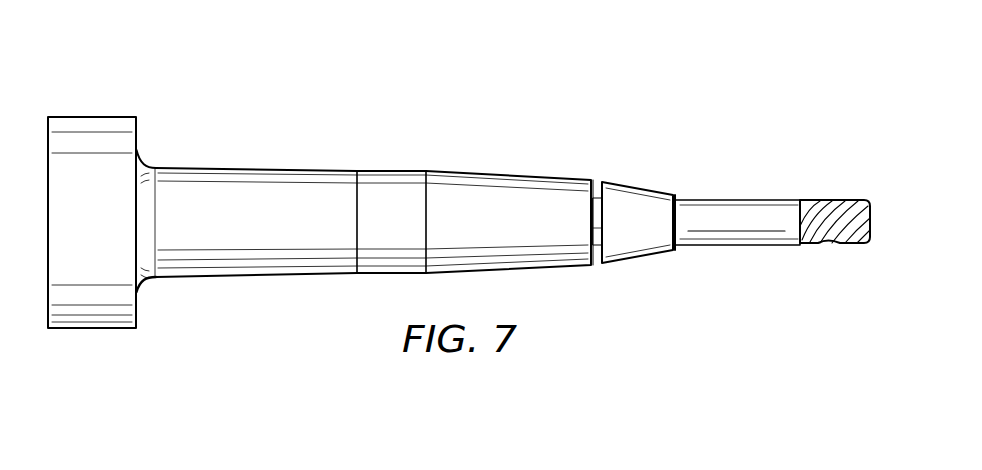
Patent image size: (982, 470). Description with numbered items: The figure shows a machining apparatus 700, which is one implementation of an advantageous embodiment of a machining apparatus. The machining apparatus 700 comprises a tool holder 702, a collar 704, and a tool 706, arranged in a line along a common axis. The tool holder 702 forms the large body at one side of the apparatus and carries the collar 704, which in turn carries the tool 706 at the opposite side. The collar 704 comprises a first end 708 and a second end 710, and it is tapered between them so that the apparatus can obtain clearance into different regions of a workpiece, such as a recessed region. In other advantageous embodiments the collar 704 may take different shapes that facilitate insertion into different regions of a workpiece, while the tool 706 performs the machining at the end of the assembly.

The machining apparatus 700 is at (461, 188).
The tool holder 702 is at (285, 276).
The collar 704 is at (638, 260).
The tool 706 is at (833, 200).
The first end 708 is at (677, 214).
The second end 710 is at (597, 181).